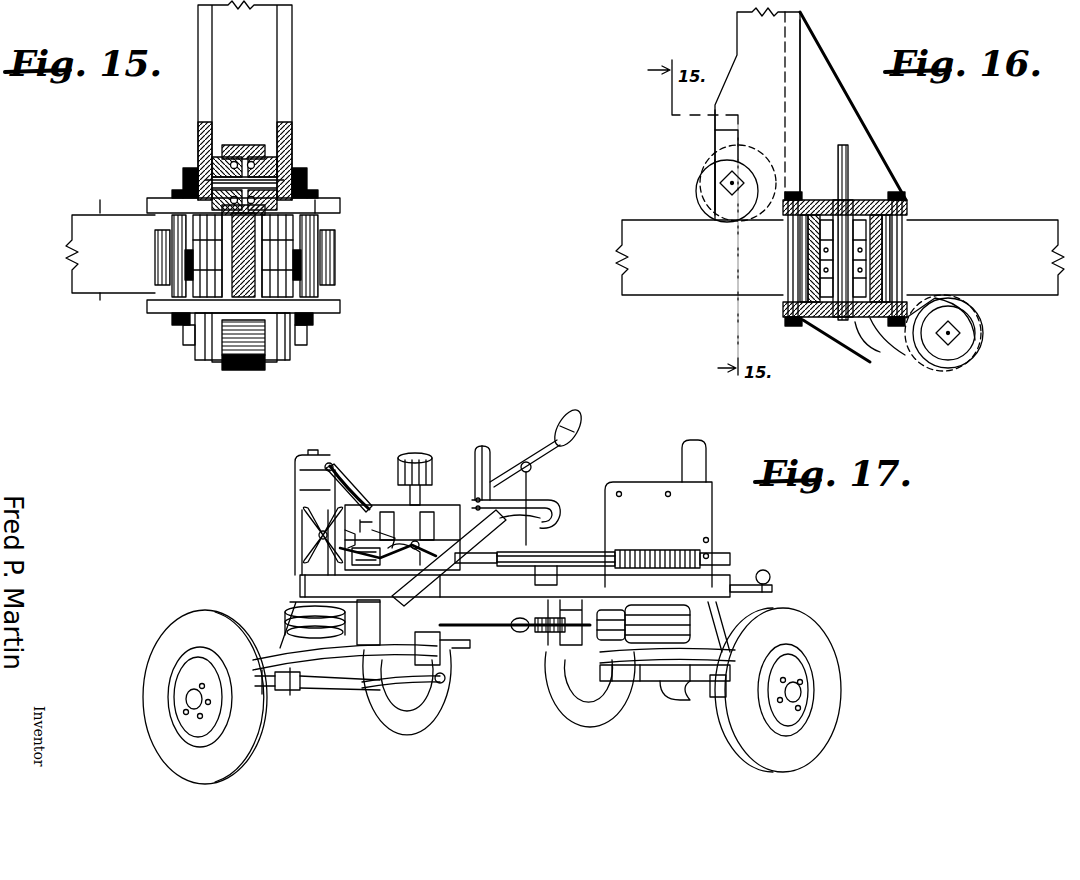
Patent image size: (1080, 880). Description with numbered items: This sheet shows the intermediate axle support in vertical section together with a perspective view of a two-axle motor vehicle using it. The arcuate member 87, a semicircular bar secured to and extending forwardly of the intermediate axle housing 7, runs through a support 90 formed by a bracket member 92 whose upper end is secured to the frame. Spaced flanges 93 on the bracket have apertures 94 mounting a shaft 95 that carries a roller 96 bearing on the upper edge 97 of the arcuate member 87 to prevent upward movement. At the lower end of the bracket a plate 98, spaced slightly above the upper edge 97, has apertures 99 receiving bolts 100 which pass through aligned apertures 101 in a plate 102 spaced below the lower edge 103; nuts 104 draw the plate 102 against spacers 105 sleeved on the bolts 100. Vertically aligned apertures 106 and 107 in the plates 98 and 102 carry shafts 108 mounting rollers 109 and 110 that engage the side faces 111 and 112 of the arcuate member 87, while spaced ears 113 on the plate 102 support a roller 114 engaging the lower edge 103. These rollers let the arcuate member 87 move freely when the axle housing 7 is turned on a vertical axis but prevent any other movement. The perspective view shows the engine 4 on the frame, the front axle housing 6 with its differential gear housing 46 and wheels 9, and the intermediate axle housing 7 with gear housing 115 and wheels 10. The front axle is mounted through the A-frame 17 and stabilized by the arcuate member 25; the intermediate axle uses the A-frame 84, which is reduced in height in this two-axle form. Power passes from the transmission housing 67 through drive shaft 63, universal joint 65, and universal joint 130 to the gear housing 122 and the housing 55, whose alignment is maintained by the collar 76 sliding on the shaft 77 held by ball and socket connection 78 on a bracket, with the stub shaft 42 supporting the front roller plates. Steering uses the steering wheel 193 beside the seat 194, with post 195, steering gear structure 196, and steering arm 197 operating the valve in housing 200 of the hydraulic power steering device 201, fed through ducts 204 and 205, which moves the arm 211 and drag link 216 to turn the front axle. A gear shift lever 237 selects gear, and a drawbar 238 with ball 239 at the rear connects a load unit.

In FIG. 17, the engine 4 is at (376, 510).
In FIG. 17, the front axle housing 6 is at (297, 706).
In FIG. 17, the intermediate axle housing 7 is at (690, 700).
In FIG. 17, the wheels 9 is at (150, 676).
In FIG. 17, the wheels 10 is at (833, 683).
In FIG. 17, the A-frame 17 is at (288, 614).
In FIG. 17, the arcuate member 25 is at (300, 660).
In FIG. 17, the stub shaft 42 is at (462, 668).
In FIG. 17, the differential gear housing 46 is at (340, 710).
In FIG. 17, the housing 55 is at (286, 638).
In FIG. 17, the drive shaft 63 is at (470, 640).
In FIG. 17, the universal joint 65 is at (520, 634).
In FIG. 17, the housing 67 is at (588, 604).
In FIG. 17, the collar 76 is at (385, 686).
In FIG. 17, the shaft 77 is at (425, 694).
In FIG. 17, the ball and socket connection 78 is at (446, 681).
In FIG. 17, the A-frame 84 is at (712, 640).
In FIG. 15, the arcuate member 87 is at (80, 220).
In FIG. 16, the arcuate member 87 is at (628, 225).
In FIG. 17, the arcuate member 87 is at (705, 654).
In FIG. 16, the support 90 is at (730, 29).
In FIG. 15, the bracket member 92 is at (292, 46).
In FIG. 16, the bracket member 92 is at (800, 68).
In FIG. 17, the bracket member 92 is at (628, 606).
In FIG. 15, the flanges 93 is at (292, 112).
In FIG. 16, the flanges 93 is at (714, 132).
In FIG. 15, the apertures 94 is at (200, 162).
In FIG. 15, the shaft 95 is at (292, 158).
In FIG. 15, the roller 96 is at (258, 147).
In FIG. 16, the roller 96 is at (700, 188).
In FIG. 15, the upper edge 97 is at (100, 213).
In FIG. 16, the upper edge 97 is at (1020, 224).
In FIG. 15, the plate 98 is at (340, 206).
In FIG. 16, the plate 98 is at (906, 207).
In FIG. 16, the apertures 99 is at (906, 215).
In FIG. 16, the bolts 100 is at (912, 242).
In FIG. 16, the apertures 101 is at (912, 290).
In FIG. 15, the plate 102 is at (340, 312).
In FIG. 16, the plate 102 is at (868, 318).
In FIG. 15, the lower edge 103 is at (98, 296).
In FIG. 16, the lower edge 103 is at (1008, 296).
In FIG. 15, the nuts 104 is at (308, 322).
In FIG. 16, the nuts 104 is at (905, 360).
In FIG. 15, the spacers 105 is at (336, 277).
In FIG. 16, the spacers 105 is at (790, 277).
In FIG. 16, the apertures 106 is at (848, 182).
In FIG. 16, the apertures 107 is at (838, 340).
In FIG. 16, the shafts 108 is at (872, 195).
In FIG. 15, the roller 109 is at (160, 257).
In FIG. 15, the roller 110 is at (334, 256).
In FIG. 16, the roller 110 is at (912, 258).
In FIG. 17, the roller 110 is at (598, 680).
In FIG. 15, the side face 111 is at (176, 265).
In FIG. 15, the side face 112 is at (272, 244).
In FIG. 16, the side face 112 is at (683, 275).
In FIG. 15, the ears 113 is at (290, 360).
In FIG. 16, the ears 113 is at (862, 366).
In FIG. 15, the roller 114 is at (250, 372).
In FIG. 16, the roller 114 is at (945, 370).
In FIG. 17, the gear housing 115 is at (668, 702).
In FIG. 17, the gear housing 122 is at (684, 606).
In FIG. 17, the universal joint 130 is at (588, 608).
In FIG. 17, the steering wheel 193 is at (565, 410).
In FIG. 17, the seat 194 is at (672, 484).
In FIG. 17, the post 195 is at (538, 442).
In FIG. 17, the steering gear structure 196 is at (410, 575).
In FIG. 17, the steering arm 197 is at (408, 566).
In FIG. 17, the housing 200 is at (472, 577).
In FIG. 17, the hydraulic power steering device 201 is at (612, 552).
In FIG. 17, the duct 204 is at (562, 505).
In FIG. 17, the duct 205 is at (548, 498).
In FIG. 17, the arm 211 is at (432, 582).
In FIG. 17, the drag link 216 is at (258, 576).
In FIG. 17, the gear shift lever 237 is at (532, 476).
In FIG. 17, the drawbar 238 is at (774, 592).
In FIG. 17, the ball 239 is at (770, 577).